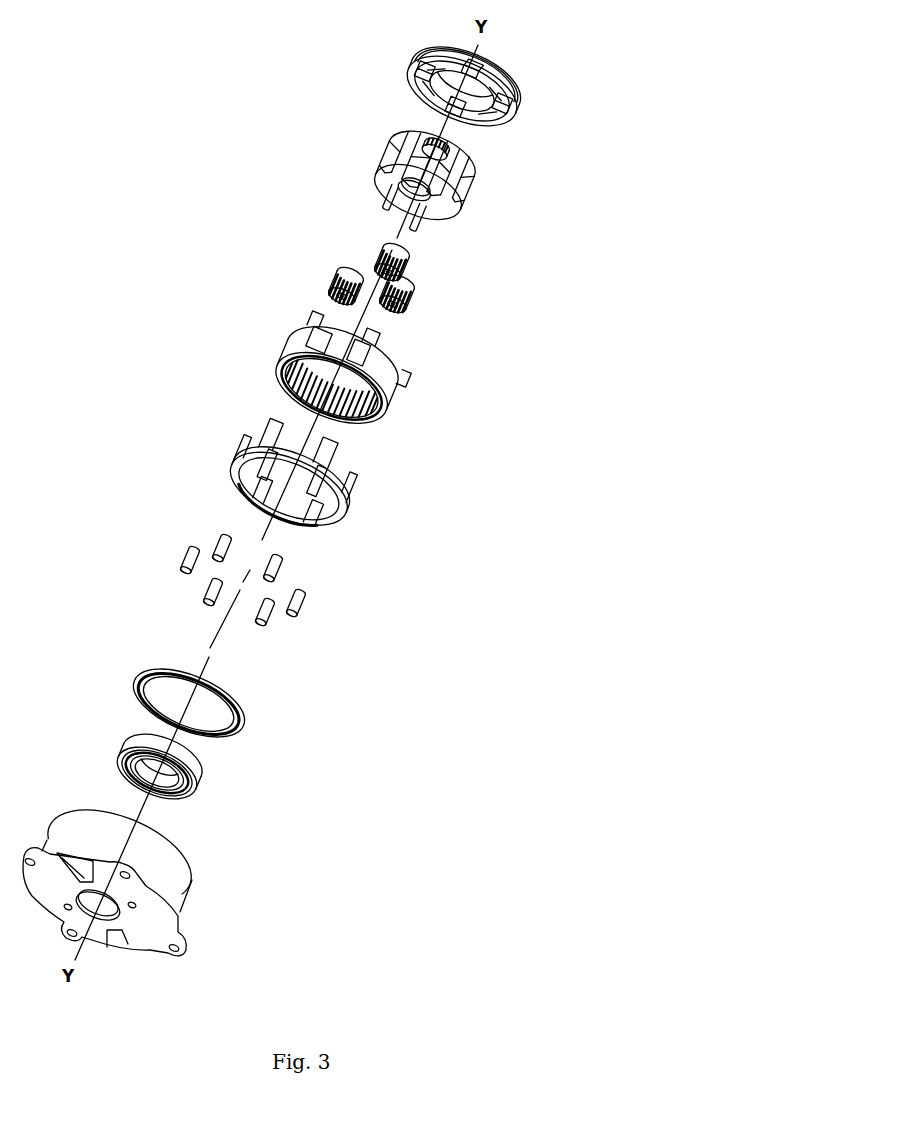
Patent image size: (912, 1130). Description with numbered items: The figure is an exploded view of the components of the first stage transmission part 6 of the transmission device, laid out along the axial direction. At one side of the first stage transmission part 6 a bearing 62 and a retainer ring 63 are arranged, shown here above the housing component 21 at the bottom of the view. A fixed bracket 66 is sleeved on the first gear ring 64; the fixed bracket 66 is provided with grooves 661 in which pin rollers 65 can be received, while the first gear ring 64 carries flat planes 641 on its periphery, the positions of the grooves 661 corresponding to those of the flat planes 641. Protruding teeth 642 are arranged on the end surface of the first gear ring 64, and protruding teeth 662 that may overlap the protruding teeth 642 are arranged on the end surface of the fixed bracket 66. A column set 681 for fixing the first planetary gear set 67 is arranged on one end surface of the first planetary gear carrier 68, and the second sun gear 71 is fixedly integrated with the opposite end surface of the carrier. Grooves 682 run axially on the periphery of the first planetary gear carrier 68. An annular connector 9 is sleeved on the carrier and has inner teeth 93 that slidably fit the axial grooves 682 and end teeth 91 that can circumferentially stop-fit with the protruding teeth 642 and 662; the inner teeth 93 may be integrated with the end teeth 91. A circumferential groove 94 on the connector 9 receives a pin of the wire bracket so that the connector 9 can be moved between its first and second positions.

The first stage transmission part 6 is at (206, 361).
The annular connector 9 is at (472, 95).
The end teeth 91 is at (411, 82).
The inner teeth 93 is at (470, 115).
The circumferential groove 94 is at (518, 101).
The second sun gear 71 is at (430, 125).
The first planetary gear carrier 68 is at (442, 157).
The column set 681 is at (386, 201).
The grooves 682 is at (472, 166).
The first planetary gear set 67 is at (422, 290).
The first gear ring 64 is at (336, 359).
The flat planes 641 is at (310, 346).
The protruding teeth 642 is at (315, 318).
The fixed bracket 66 is at (294, 464).
The grooves 661 is at (252, 505).
The protruding teeth 662 is at (277, 425).
The pin rollers 65 is at (303, 602).
The retainer ring 63 is at (238, 720).
The bearing 62 is at (200, 784).
The motor end housing 21 is at (170, 878).